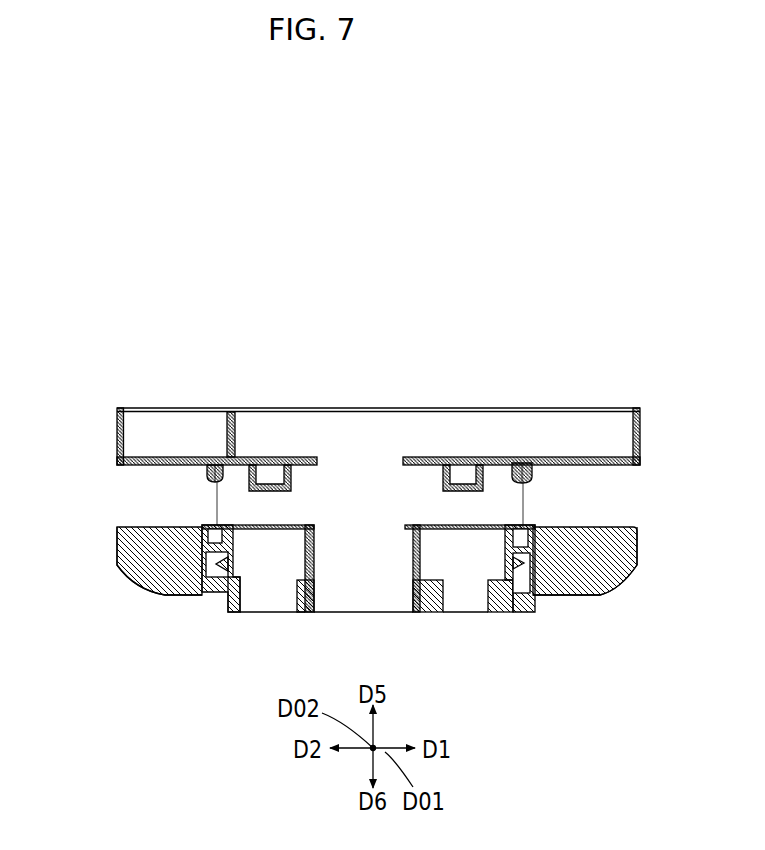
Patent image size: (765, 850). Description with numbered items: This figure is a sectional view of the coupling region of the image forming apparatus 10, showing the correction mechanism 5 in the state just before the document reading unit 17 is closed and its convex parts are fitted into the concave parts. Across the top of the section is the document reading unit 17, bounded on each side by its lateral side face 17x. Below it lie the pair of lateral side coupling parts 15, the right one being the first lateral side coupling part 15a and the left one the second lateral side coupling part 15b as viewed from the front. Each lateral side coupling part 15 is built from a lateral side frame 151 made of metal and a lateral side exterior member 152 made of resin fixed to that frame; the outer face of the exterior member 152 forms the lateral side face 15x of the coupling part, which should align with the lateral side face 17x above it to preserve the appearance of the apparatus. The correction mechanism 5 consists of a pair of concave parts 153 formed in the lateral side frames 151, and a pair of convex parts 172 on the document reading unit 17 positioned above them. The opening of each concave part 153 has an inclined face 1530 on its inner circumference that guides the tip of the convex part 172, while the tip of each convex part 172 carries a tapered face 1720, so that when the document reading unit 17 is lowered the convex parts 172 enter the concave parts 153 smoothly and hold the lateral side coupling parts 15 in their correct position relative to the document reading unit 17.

The image forming apparatus 10 is at (94, 362).
The document reading unit 17 is at (112, 430).
The lateral side face of the document reading unit 17x is at (117, 447).
The convex part 172 is at (258, 458).
The tapered face 1720 is at (203, 485).
The correction mechanism 5 is at (522, 446).
The lateral side coupling part 15 is at (379, 578).
The first lateral side coupling part 15a is at (642, 548).
The second lateral side coupling part 15b is at (114, 548).
The lateral side face of the lateral side coupling part 15x is at (114, 556).
The lateral side exterior member 152 is at (173, 600).
The inclined face 1530 is at (226, 526).
The lateral side frame 151 is at (310, 598).
The concave part 153 is at (215, 525).